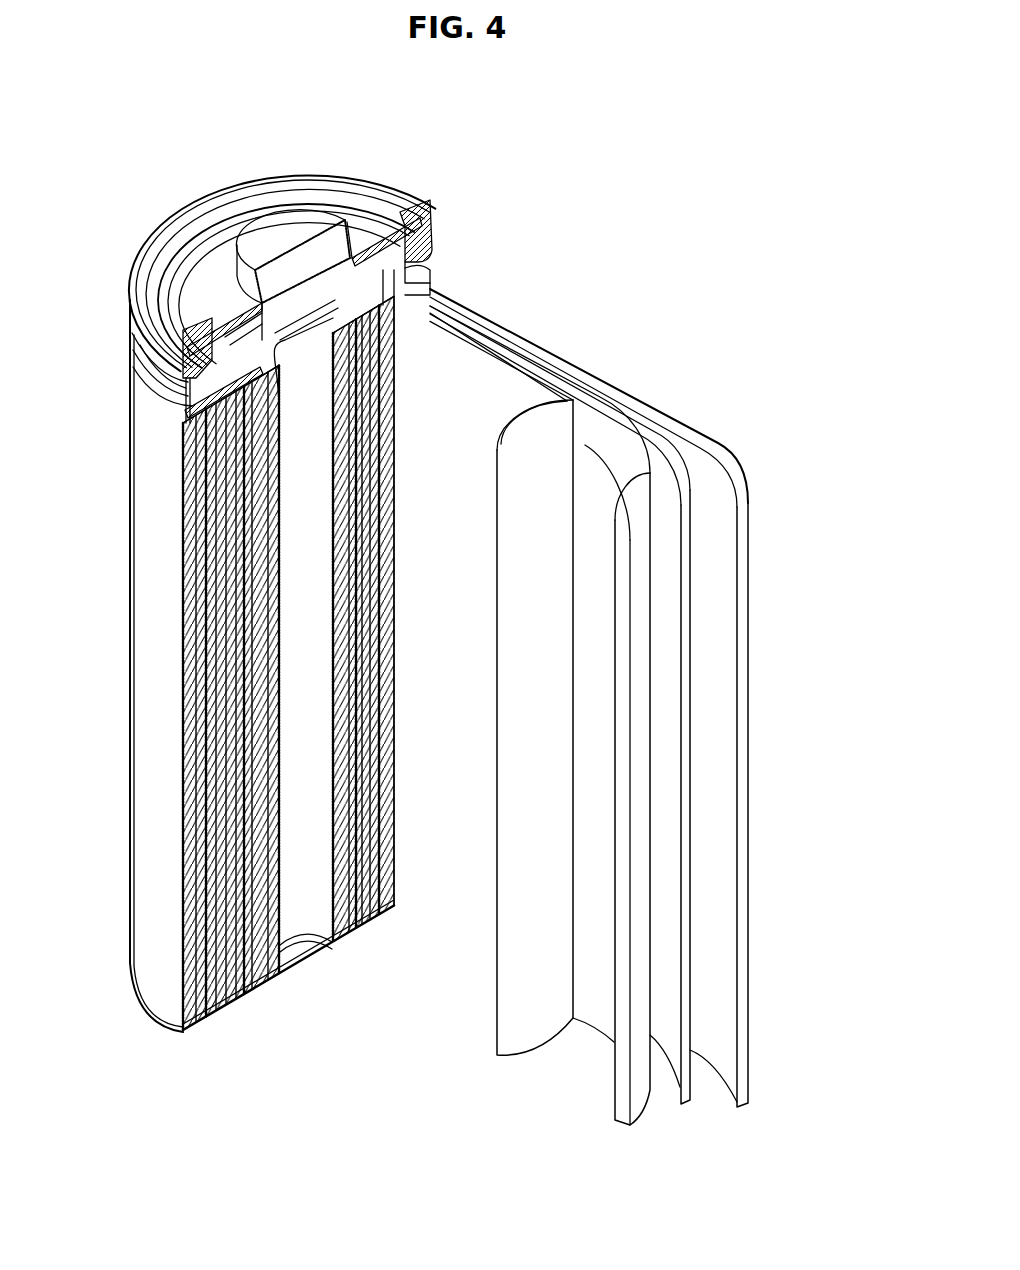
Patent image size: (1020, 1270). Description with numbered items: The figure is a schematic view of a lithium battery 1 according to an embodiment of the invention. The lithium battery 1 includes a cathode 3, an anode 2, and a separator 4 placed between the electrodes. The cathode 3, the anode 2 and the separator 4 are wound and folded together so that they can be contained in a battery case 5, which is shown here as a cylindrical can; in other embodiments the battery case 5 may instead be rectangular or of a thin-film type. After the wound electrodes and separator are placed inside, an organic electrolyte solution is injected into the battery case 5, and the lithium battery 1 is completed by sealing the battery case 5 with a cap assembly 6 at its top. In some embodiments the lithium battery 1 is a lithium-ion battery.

The lithium battery 1 is at (598, 198).
The anode 2 is at (720, 465).
The cathode 3 is at (633, 462).
The separator 4 is at (537, 455).
The battery case 5 is at (137, 655).
The cap assembly 6 is at (272, 228).